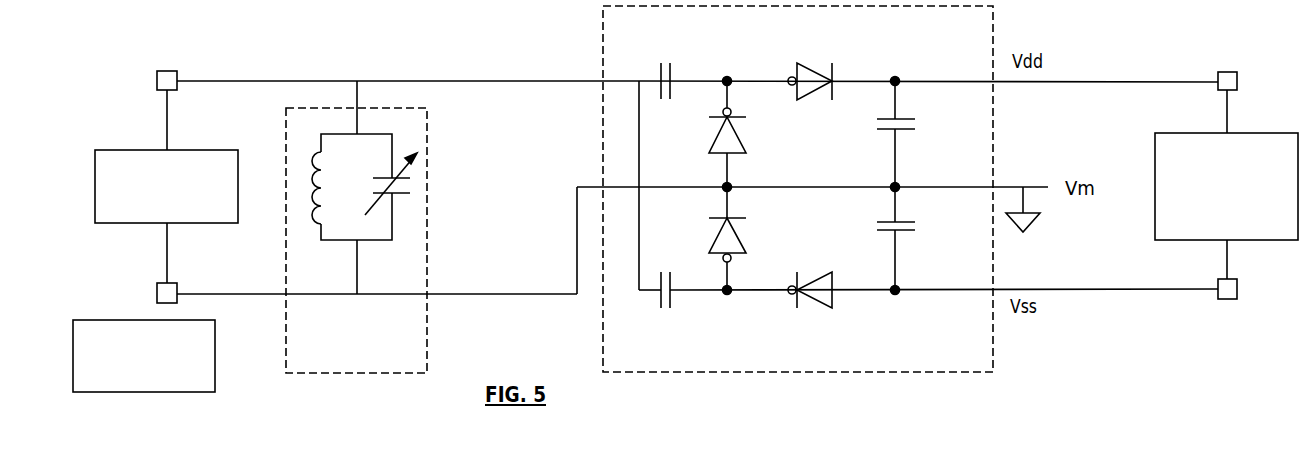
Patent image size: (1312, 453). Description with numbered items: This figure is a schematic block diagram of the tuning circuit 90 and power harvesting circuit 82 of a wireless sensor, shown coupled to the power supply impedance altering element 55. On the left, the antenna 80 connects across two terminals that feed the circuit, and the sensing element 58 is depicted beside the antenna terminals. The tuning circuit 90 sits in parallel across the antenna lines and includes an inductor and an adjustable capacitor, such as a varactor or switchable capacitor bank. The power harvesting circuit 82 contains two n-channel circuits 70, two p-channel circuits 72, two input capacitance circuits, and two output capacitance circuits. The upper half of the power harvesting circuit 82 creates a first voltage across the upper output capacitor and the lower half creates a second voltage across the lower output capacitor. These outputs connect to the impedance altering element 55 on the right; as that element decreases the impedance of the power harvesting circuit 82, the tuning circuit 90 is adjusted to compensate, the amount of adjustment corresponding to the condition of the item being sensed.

The antenna 80 is at (214, 198).
The sensing element 58 is at (194, 380).
The tuning circuit 90 is at (394, 360).
The power harvesting circuit 82 is at (910, 189).
The n-channel circuit 70 is at (777, 142).
The p-channel circuit 72 is at (825, 52).
The power supply impedance altering element 55 is at (1274, 228).